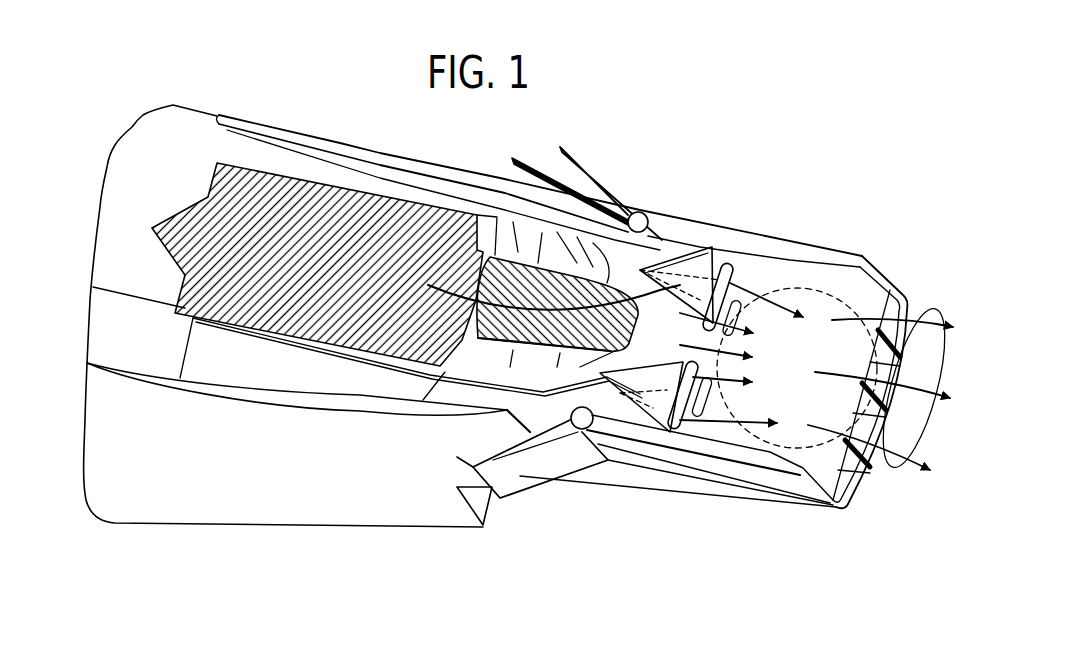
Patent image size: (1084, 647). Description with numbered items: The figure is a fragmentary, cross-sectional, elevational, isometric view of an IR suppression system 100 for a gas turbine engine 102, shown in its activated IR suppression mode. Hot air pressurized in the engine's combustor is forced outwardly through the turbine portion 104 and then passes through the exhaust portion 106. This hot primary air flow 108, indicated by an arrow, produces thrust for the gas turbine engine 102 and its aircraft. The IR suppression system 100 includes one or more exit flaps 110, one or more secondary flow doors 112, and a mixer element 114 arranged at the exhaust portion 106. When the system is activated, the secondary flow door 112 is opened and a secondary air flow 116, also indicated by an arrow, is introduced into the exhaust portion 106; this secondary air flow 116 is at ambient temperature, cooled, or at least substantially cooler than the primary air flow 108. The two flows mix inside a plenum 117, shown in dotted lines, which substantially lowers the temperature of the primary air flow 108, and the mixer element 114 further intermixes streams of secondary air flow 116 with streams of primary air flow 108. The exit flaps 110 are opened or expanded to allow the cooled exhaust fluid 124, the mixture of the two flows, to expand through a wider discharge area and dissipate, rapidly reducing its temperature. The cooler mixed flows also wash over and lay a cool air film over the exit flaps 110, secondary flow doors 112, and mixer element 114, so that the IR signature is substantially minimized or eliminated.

The IR suppression system 100 is at (632, 176).
The gas turbine engine 102 is at (262, 78).
The turbine portion 104 is at (203, 285).
The exhaust portion 106 is at (610, 557).
The primary air flow 108 is at (450, 335).
The exit flaps 110 is at (753, 234).
The secondary flow doors 112 is at (575, 158).
The mixer element 114 is at (693, 270).
The secondary air flow 116 is at (525, 165).
The plenum 117 is at (848, 307).
The cooled exhaust fluid 124 is at (890, 472).